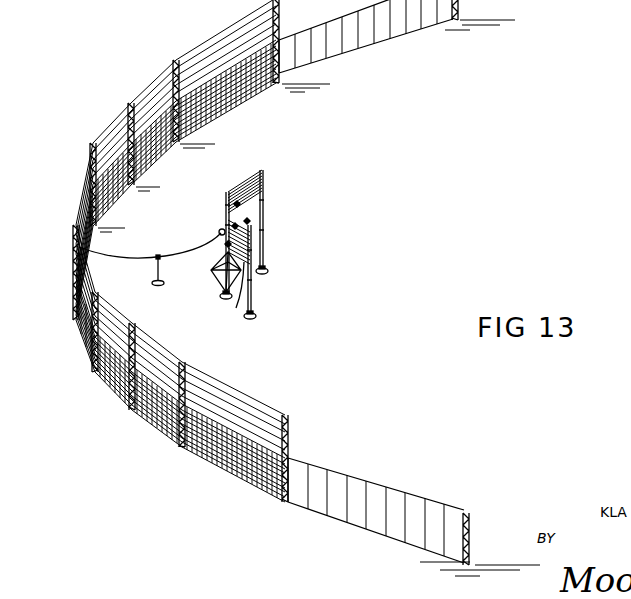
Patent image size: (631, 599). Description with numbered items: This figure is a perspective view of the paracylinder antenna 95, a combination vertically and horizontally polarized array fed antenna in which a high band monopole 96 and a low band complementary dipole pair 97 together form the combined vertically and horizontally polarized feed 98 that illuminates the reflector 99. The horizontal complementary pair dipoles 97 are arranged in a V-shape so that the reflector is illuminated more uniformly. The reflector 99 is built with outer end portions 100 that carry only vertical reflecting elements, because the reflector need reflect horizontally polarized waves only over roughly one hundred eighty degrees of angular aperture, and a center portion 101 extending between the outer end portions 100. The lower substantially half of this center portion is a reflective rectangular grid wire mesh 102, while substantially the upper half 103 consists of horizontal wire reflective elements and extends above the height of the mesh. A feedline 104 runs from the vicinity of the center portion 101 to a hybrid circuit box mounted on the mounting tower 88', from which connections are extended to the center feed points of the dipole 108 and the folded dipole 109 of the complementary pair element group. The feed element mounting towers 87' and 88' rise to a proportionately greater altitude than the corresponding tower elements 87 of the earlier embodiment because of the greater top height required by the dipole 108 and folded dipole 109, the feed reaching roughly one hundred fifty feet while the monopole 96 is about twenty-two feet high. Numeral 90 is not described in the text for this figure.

The feed element mounting tower 87 is at (277, 222).
The feed element mounting tower 87' is at (269, 272).
The mounting tower 88' is at (211, 243).
The barrier assembly 90 is at (326, 288).
The paracylinder antenna 95 is at (137, 432).
The high band monopole 96 is at (211, 268).
The low band complementary dipole pair 97 is at (240, 178).
The combined vertically and horizontally polarized feed 98 is at (290, 220).
The reflector 99 is at (292, 23).
The outer end portions 100 is at (393, 33).
The center portion 101 is at (74, 348).
The reflective rectangular grid wire mesh 102 is at (113, 383).
The upper half 103 is at (238, 400).
The feedline 104 is at (130, 254).
The dipole 108 is at (226, 293).
The folded dipole 109 is at (252, 172).